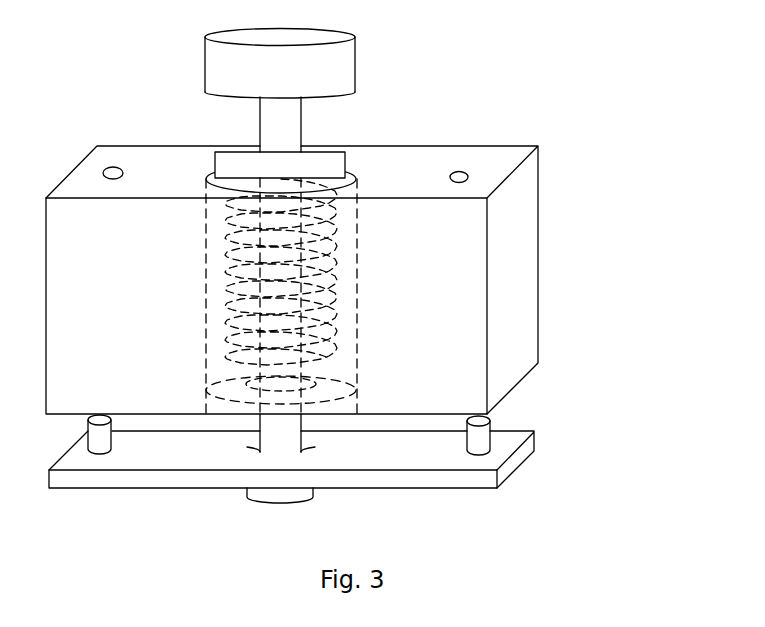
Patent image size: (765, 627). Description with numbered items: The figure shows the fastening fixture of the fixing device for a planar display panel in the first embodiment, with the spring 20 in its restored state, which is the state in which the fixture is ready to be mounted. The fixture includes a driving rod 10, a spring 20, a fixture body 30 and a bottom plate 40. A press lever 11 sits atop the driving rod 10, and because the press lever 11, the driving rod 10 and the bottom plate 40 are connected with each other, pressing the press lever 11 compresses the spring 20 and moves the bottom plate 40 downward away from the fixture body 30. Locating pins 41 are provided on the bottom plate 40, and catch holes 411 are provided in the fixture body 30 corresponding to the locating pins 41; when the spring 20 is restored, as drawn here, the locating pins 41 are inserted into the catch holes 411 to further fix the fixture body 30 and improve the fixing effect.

The driving rod 10 is at (287, 137).
The press lever 11 is at (342, 54).
The spring 20 is at (333, 340).
The fixture body 30 is at (508, 200).
The bottom plate 40 is at (505, 478).
The locating pins 41 is at (480, 442).
The catch holes 411 is at (465, 173).